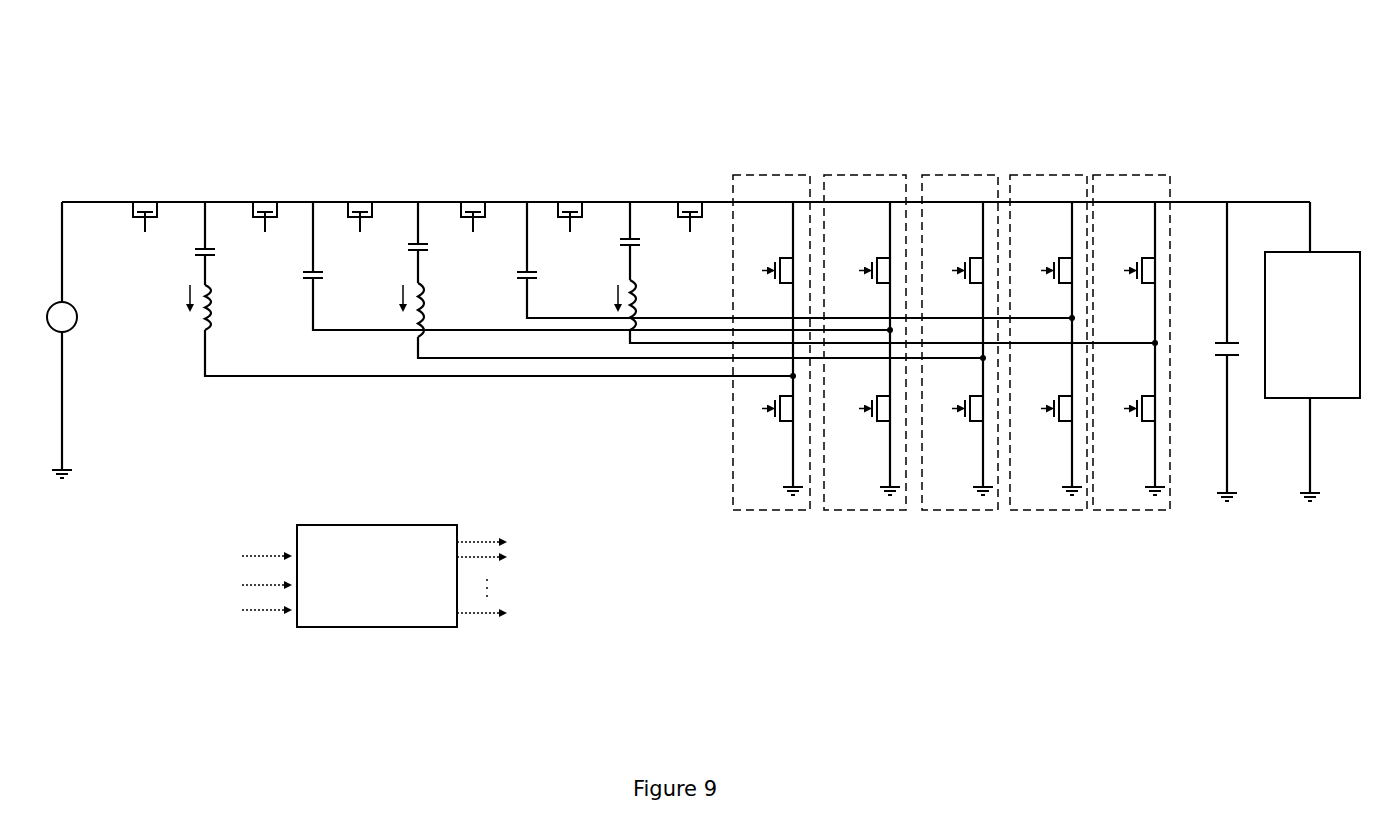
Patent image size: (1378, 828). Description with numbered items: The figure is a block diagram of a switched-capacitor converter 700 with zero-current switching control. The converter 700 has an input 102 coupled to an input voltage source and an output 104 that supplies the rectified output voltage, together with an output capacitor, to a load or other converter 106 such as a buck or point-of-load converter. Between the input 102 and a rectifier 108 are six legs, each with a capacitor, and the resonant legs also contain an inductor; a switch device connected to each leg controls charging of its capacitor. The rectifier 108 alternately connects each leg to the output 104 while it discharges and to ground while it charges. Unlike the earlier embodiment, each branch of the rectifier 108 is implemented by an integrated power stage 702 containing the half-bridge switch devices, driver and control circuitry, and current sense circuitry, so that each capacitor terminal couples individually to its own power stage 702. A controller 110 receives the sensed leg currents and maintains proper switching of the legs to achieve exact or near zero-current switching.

The switched-capacitor converter 700 is at (66, 107).
The input 102 is at (50, 224).
The output 104 is at (1318, 194).
The load or other converter 106 is at (1312, 351).
The rectifier 108 is at (733, 528).
The integrated power stage 702 is at (951, 342).
The controller 110 is at (386, 576).